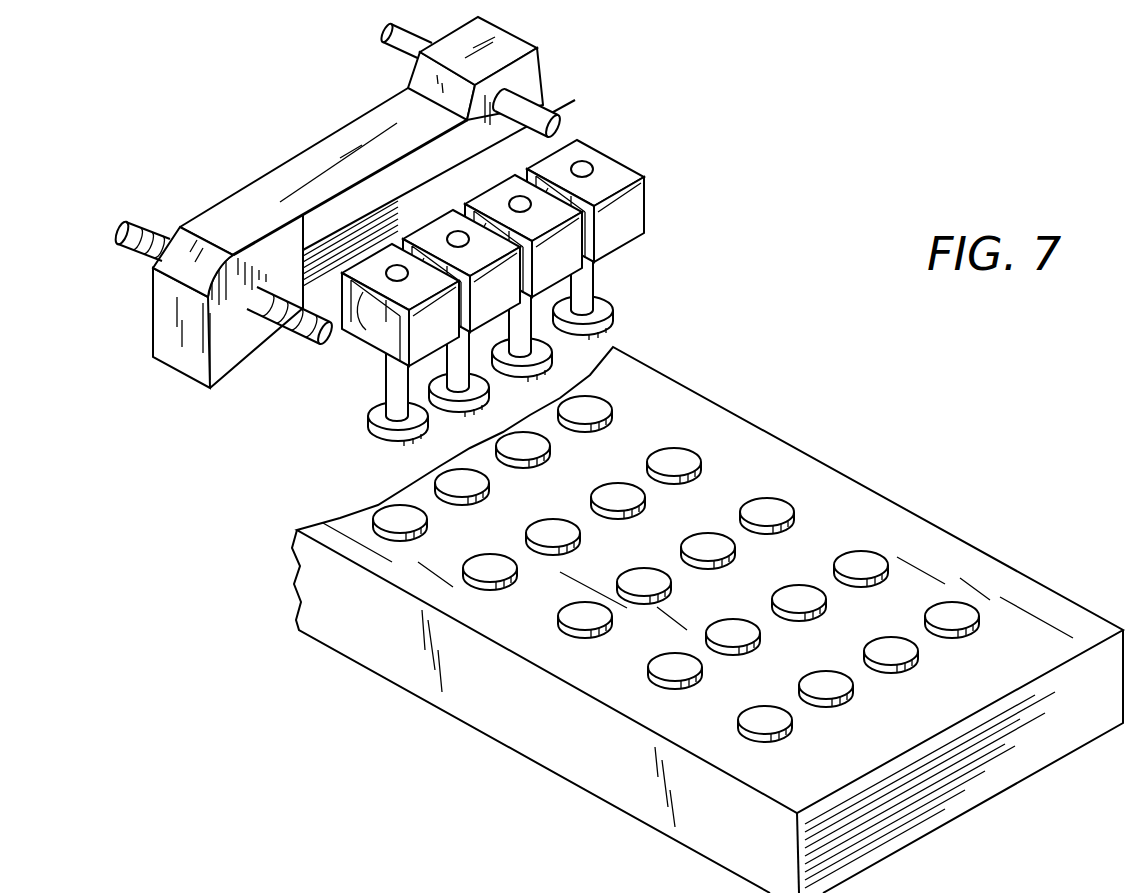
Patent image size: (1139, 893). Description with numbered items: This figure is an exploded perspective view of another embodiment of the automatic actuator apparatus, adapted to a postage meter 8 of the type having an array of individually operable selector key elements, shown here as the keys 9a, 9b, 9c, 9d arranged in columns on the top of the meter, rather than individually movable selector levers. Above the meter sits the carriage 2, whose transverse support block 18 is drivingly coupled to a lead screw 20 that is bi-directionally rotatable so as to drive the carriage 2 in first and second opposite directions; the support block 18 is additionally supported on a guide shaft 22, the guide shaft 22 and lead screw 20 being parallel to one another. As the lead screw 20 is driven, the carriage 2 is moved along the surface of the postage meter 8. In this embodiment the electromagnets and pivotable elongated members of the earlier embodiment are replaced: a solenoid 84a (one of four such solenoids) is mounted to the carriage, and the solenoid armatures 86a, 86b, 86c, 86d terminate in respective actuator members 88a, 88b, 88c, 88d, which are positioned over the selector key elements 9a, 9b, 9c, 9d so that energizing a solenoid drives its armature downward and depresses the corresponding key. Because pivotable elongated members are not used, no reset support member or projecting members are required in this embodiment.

The carriage 2 is at (186, 393).
The postage meter 8 is at (857, 469).
The selector key element 9a is at (560, 394).
The selector key element 9b is at (501, 426).
The selector key element 9c is at (438, 460).
The selector key element 9d is at (377, 499).
The transverse support block 18 is at (266, 182).
The lead screw 20 is at (144, 232).
The guide shaft 22 is at (562, 114).
The solenoid 84a is at (647, 220).
The solenoid armature 86a is at (592, 276).
The solenoid armature 86b is at (530, 311).
The solenoid armature 86c is at (468, 346).
The solenoid armature 86d is at (407, 380).
The actuator member 88a is at (613, 306).
The actuator member 88b is at (553, 356).
The actuator member 88c is at (430, 385).
The actuator member 88d is at (370, 425).